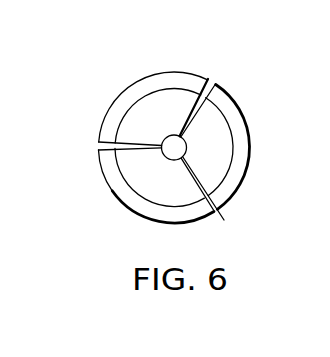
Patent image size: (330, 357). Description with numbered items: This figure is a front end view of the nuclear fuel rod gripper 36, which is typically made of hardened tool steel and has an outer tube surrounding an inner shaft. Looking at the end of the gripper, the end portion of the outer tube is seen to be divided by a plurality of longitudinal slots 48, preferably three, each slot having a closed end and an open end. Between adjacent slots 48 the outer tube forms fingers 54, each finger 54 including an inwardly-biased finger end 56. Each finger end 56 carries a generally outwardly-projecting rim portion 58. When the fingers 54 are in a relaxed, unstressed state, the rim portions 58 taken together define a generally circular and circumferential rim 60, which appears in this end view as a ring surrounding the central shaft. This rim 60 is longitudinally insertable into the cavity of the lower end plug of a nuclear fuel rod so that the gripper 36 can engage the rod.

The nuclear fuel rod gripper 36 is at (88, 93).
The longitudinal slot 48 is at (224, 220).
The finger 54 is at (228, 110).
The inwardly-biased finger end 56 is at (243, 153).
The rim portion 58 is at (176, 89).
The circumferential rim 60 is at (135, 189).